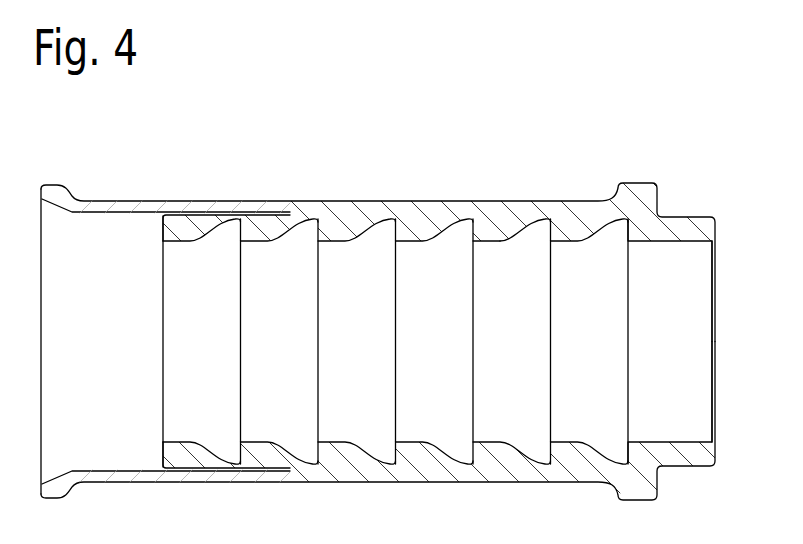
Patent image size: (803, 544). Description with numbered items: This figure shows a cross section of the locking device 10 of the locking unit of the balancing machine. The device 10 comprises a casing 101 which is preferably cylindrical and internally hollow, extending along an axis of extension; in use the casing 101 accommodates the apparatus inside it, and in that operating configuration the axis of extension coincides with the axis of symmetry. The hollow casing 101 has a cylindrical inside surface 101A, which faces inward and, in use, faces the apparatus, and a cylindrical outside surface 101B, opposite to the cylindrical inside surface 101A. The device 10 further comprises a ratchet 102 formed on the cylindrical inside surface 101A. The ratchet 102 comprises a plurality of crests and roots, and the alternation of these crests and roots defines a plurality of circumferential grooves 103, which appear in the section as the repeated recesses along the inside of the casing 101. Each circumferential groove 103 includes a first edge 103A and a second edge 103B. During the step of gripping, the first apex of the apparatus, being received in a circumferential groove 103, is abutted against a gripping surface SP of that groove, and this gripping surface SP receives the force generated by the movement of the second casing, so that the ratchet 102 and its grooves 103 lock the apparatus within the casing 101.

The casing 101 is at (200, 222).
The device 10 is at (396, 265).
The cylindrical outside surface 101B is at (413, 212).
The circumferential grooves 103 is at (396, 264).
The second edge 103B is at (487, 236).
The first edge 103A is at (502, 237).
The gripping surface SP is at (564, 216).
The ratchet 102 is at (598, 216).
The cylindrical inside surface 101A is at (677, 238).